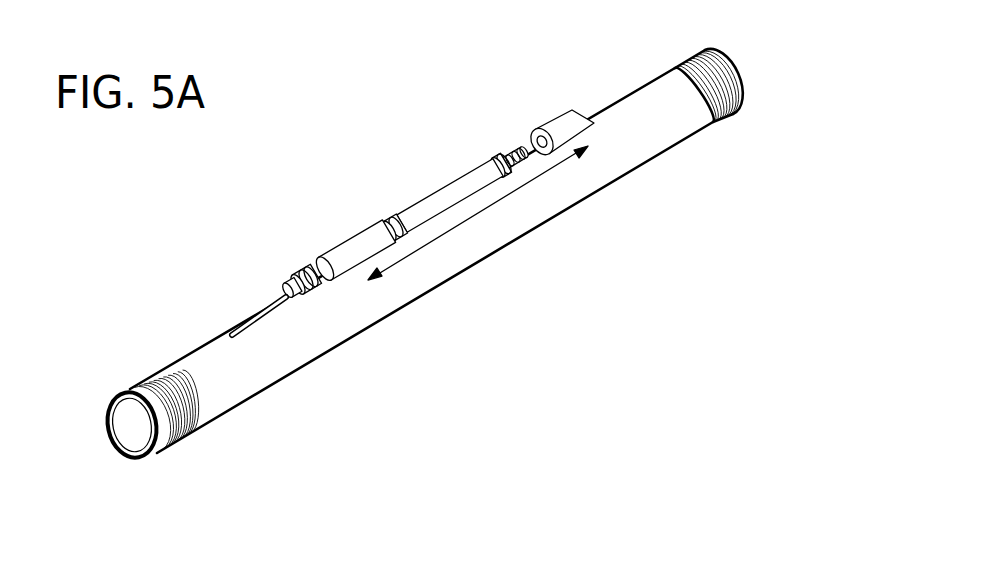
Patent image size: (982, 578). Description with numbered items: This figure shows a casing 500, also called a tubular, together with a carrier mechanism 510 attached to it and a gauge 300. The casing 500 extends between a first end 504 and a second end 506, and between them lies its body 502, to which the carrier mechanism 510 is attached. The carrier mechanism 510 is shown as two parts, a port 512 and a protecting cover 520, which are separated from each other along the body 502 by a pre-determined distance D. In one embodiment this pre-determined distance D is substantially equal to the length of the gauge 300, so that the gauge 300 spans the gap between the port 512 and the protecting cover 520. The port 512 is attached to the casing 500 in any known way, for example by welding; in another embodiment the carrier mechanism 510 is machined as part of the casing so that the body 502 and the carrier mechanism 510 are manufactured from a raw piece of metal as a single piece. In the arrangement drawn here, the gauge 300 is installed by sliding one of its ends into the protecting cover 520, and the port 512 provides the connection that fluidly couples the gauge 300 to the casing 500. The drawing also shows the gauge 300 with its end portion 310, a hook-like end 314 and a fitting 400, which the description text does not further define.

The gauge 300 is at (436, 192).
The fuse end terminal 310 is at (513, 152).
The pull hook 314 is at (254, 312).
The connector fitting 400 is at (289, 283).
The casing 500 is at (462, 283).
The body 502 is at (417, 283).
The first end 504 is at (172, 438).
The second end 506 is at (721, 105).
The carrier mechanism 510 is at (800, 290).
The port 512 is at (556, 122).
The protecting cover 520 is at (345, 240).